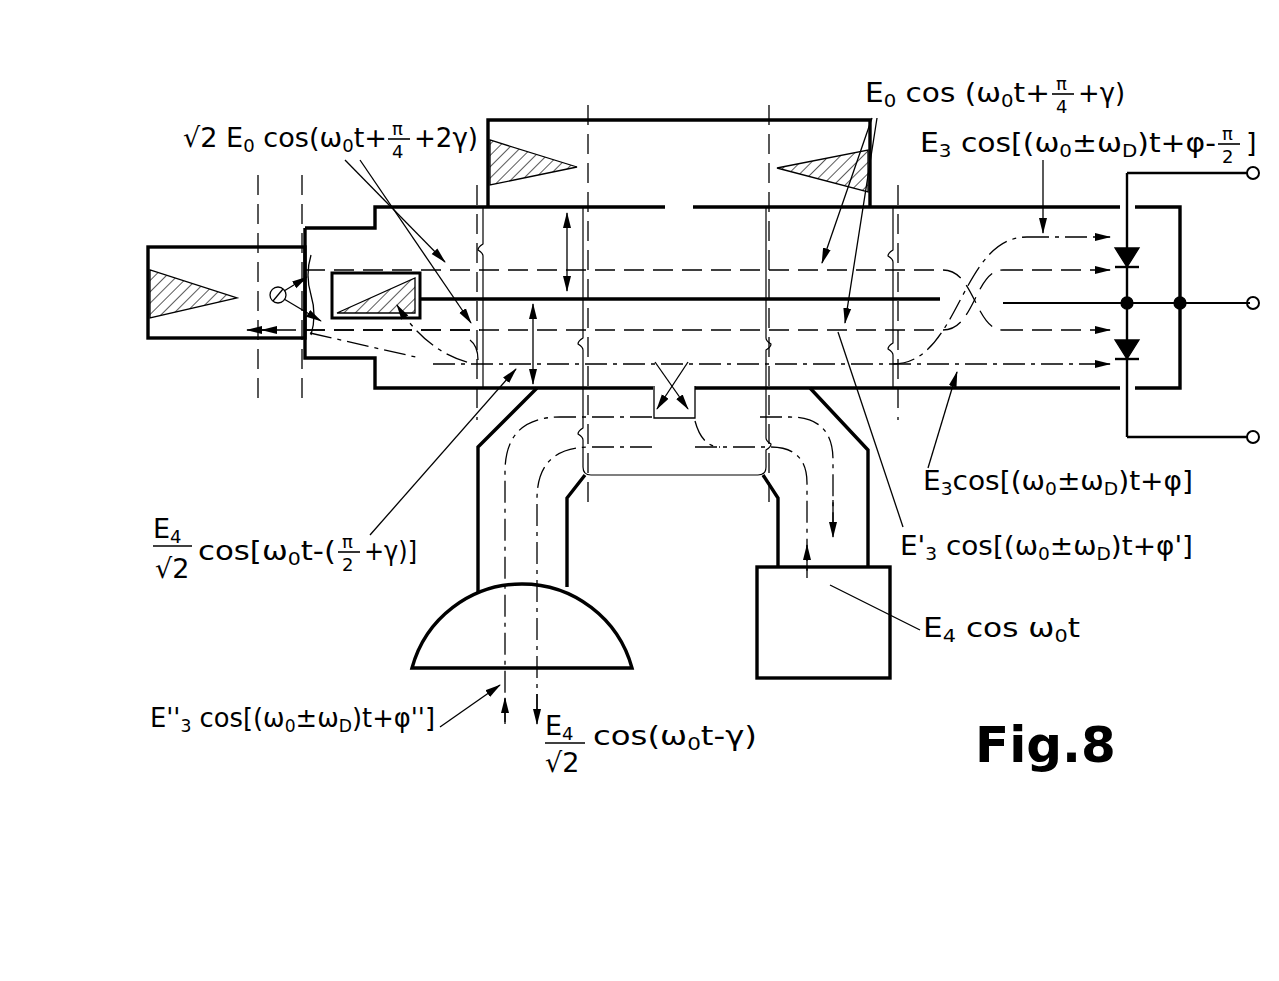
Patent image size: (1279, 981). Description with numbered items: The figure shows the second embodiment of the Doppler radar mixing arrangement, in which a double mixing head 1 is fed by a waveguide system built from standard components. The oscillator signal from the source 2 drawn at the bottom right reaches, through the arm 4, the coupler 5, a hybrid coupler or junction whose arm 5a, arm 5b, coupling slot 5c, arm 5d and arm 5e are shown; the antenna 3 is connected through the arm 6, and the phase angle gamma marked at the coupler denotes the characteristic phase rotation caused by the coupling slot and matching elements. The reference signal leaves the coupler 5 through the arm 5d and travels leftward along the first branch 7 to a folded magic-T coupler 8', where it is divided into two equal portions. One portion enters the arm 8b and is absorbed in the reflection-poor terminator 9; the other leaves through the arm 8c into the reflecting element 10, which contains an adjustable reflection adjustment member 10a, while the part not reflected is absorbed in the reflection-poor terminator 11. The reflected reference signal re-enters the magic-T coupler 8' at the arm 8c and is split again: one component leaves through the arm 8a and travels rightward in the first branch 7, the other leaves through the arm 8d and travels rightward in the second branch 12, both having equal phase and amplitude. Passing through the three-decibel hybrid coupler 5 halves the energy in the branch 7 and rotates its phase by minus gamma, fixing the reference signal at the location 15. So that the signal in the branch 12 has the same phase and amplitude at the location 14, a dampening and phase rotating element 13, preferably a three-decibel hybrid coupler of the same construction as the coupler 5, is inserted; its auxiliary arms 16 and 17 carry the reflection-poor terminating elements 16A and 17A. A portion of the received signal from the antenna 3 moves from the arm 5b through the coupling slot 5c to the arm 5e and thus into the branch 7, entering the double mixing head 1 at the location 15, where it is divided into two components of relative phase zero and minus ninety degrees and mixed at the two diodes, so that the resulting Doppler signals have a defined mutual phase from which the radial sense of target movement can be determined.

The double mixing head 1 is at (938, 260).
The local oscillator / signal source 2 is at (823, 622).
The antenna 3 is at (640, 528).
The waveguide arm 4 is at (788, 528).
The coupler 5 is at (669, 472).
The right branch of coupling waveguide 5a is at (764, 497).
The arm 5b is at (578, 570).
The coupling slot 5c is at (686, 394).
The arm 5d is at (555, 349).
The arm 5e is at (796, 349).
The waveguide arm 6 is at (519, 568).
The first branch 7 is at (532, 327).
The folded magic-T coupler 8' is at (365, 357).
The arm 8a is at (478, 345).
The arm 8b is at (399, 317).
The arm 8c is at (315, 286).
The arm 8d is at (742, 302).
The terminating element 9 is at (443, 328).
The reflecting element 10 is at (293, 384).
The reflection adjustment member 10a is at (268, 305).
The terminating element 11 is at (216, 280).
The second branch 12 is at (566, 246).
The dampening and phase rotating element 13 is at (674, 247).
The location 14 is at (707, 302).
The location 15 is at (707, 300).
The auxiliary arm 16 is at (560, 150).
The terminating element 16A is at (547, 168).
The auxiliary arm 17 is at (815, 153).
The terminating element 17A is at (783, 170).